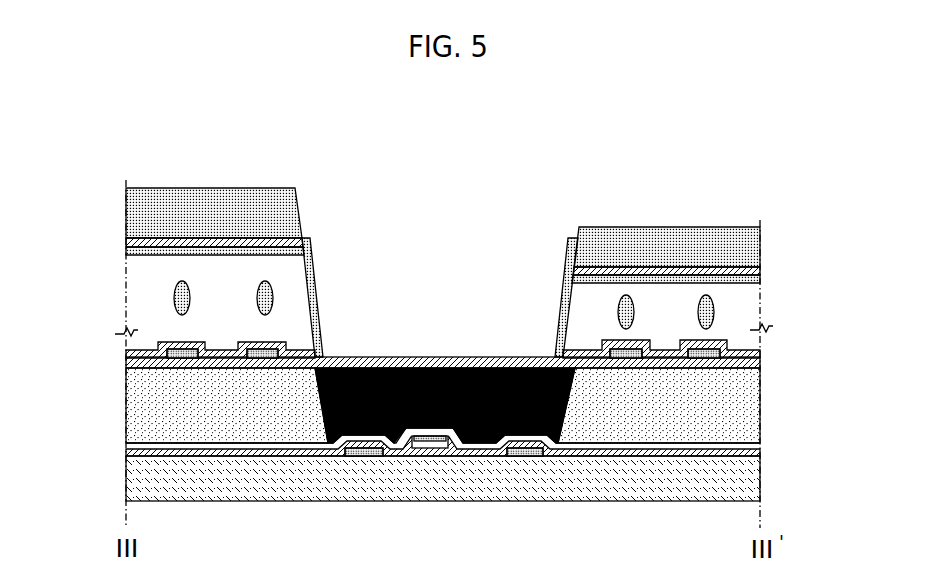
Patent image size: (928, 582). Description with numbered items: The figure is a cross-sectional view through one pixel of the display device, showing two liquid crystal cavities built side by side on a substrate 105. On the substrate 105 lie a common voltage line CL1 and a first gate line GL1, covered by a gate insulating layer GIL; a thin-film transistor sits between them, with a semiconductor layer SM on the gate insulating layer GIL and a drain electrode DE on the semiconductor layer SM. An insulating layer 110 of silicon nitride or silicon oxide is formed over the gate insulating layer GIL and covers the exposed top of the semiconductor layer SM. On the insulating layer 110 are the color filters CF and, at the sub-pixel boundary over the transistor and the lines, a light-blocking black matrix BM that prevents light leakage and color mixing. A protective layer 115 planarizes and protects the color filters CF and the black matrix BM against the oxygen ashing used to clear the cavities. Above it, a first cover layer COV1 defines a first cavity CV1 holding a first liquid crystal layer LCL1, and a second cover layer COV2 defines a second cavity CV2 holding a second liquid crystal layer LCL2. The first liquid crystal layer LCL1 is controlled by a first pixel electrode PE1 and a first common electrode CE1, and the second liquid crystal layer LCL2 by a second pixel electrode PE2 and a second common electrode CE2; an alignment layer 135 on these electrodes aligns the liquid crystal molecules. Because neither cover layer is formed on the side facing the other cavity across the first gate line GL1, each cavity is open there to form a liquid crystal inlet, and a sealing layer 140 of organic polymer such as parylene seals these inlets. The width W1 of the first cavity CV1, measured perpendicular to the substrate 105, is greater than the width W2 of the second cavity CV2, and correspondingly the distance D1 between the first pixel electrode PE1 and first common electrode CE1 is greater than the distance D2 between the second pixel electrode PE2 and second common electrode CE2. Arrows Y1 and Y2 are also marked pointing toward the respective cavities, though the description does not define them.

The substrate 105 is at (750, 484).
The insulating layer 110 is at (479, 468).
The protective layer 115 is at (750, 362).
The alignment layer 135 is at (152, 352).
The sealing layer 140 is at (313, 263).
The gate insulating layer GIL is at (755, 452).
The common voltage line CL1 is at (362, 453).
The first gate line GL1 is at (525, 453).
The semiconductor layer SM is at (430, 441).
The drain electrode DE is at (440, 447).
The color filter CF is at (258, 395).
The black matrix BM is at (322, 400).
The first pixel electrode PE1 is at (182, 358).
The second pixel electrode PE2 is at (622, 358).
The first cover layer COV1 is at (232, 213).
The second cover layer COV2 is at (652, 245).
The first common electrode CE1 is at (265, 244).
The second common electrode CE2 is at (620, 271).
The first cavity CV1 is at (225, 281).
The second cavity CV2 is at (680, 315).
The first liquid crystal layer LCL1 is at (285, 272).
The second liquid crystal layer LCL2 is at (600, 300).
The width of the first cavity W1 is at (126, 358).
The width of the second cavity W2 is at (760, 265).
The distance between the first pixel electrode and the first common electrode D1 is at (95, 248).
The distance between the second pixel electrode and the second common electrode D2 is at (760, 275).
The first direction Y1 is at (328, 313).
The second direction Y2 is at (552, 313).